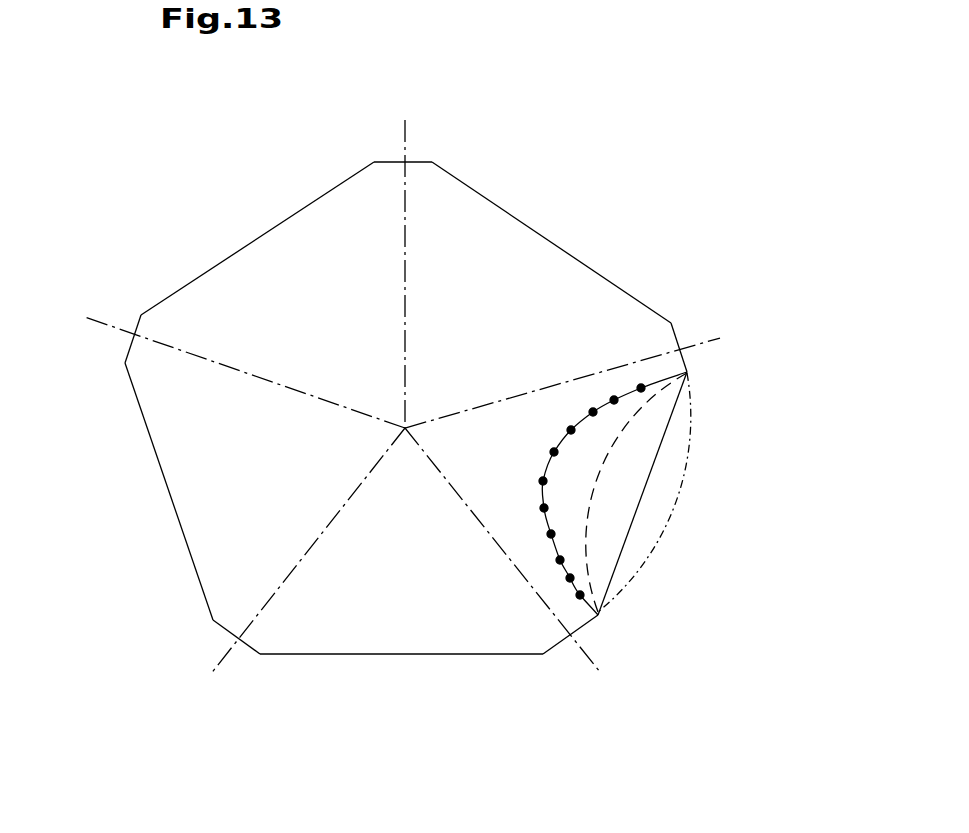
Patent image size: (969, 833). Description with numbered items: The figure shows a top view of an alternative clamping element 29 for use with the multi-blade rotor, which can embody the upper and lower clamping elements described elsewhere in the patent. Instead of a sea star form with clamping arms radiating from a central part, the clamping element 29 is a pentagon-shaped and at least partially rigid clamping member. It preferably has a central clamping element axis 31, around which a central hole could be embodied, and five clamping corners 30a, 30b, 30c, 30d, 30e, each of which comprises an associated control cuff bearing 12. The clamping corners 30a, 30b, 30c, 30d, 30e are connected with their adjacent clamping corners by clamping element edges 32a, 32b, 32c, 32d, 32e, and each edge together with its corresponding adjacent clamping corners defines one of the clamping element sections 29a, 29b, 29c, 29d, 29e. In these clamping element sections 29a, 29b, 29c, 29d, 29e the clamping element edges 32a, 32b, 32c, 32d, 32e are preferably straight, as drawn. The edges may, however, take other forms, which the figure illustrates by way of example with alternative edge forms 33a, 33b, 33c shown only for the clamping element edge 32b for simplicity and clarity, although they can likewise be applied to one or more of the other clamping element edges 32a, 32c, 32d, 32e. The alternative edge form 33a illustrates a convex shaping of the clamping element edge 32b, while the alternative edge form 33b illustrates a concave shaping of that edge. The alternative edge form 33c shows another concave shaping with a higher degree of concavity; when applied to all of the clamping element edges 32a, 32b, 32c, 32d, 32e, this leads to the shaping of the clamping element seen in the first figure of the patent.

The control cuff bearing 12 is at (406, 416).
The clamping element 29 is at (411, 411).
The clamping element section 29a is at (551, 237).
The clamping element section 29b is at (705, 494).
The clamping element section 29c is at (401, 714).
The clamping element section 29d is at (117, 491).
The clamping element section 29e is at (257, 222).
The clamping corner 30a is at (410, 159).
The clamping corner 30b is at (692, 360).
The clamping corner 30c is at (562, 657).
The clamping corner 30d is at (240, 655).
The clamping corner 30e is at (122, 345).
The central clamping element axis 31 is at (409, 423).
The clamping element edge 32a is at (579, 261).
The clamping element edge 32b is at (650, 475).
The clamping element edge 32c is at (458, 655).
The clamping element edge 32d is at (144, 418).
The clamping element edge 32e is at (233, 255).
The alternative edge form 33a is at (672, 527).
The alternative edge form 33b is at (645, 405).
The alternative edge form 33c is at (563, 563).